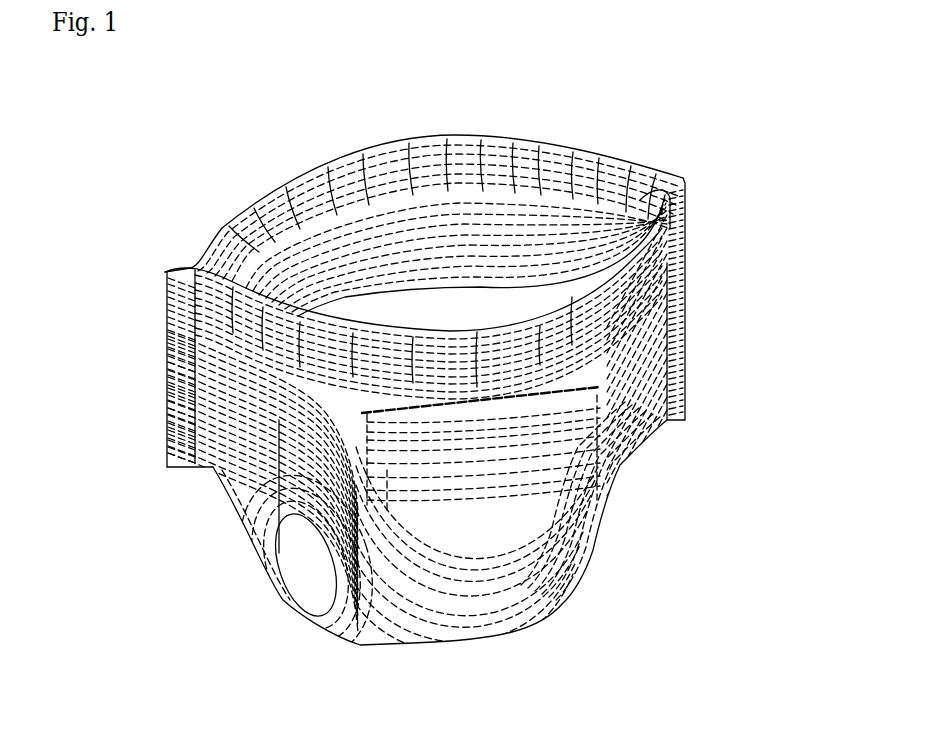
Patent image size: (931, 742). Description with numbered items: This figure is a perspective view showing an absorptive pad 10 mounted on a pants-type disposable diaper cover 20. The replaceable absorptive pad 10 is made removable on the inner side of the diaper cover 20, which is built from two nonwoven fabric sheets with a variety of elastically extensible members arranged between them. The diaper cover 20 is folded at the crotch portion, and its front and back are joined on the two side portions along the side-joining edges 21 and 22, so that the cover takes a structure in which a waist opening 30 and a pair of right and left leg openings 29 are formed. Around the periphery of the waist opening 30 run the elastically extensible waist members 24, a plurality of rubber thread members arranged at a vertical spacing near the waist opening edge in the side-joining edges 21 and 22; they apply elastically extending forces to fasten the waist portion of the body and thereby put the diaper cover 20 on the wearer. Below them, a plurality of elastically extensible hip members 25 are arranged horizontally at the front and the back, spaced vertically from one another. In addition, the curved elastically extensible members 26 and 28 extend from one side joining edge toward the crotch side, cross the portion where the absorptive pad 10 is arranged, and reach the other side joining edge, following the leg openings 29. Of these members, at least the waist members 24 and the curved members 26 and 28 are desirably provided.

The absorptive pad 10 is at (485, 283).
The pants-type disposable diaper cover 20 is at (403, 647).
The side-joining edge 21 is at (173, 413).
The side-joining edge 22 is at (686, 250).
The elastically extensible waist members 24 is at (352, 165).
The elastically extensible hip members 25 is at (280, 198).
The curved elastically extensible member 26 is at (252, 548).
The curved elastically extensible member 28 is at (508, 555).
The leg opening 29 is at (272, 580).
The waist opening 30 is at (420, 137).